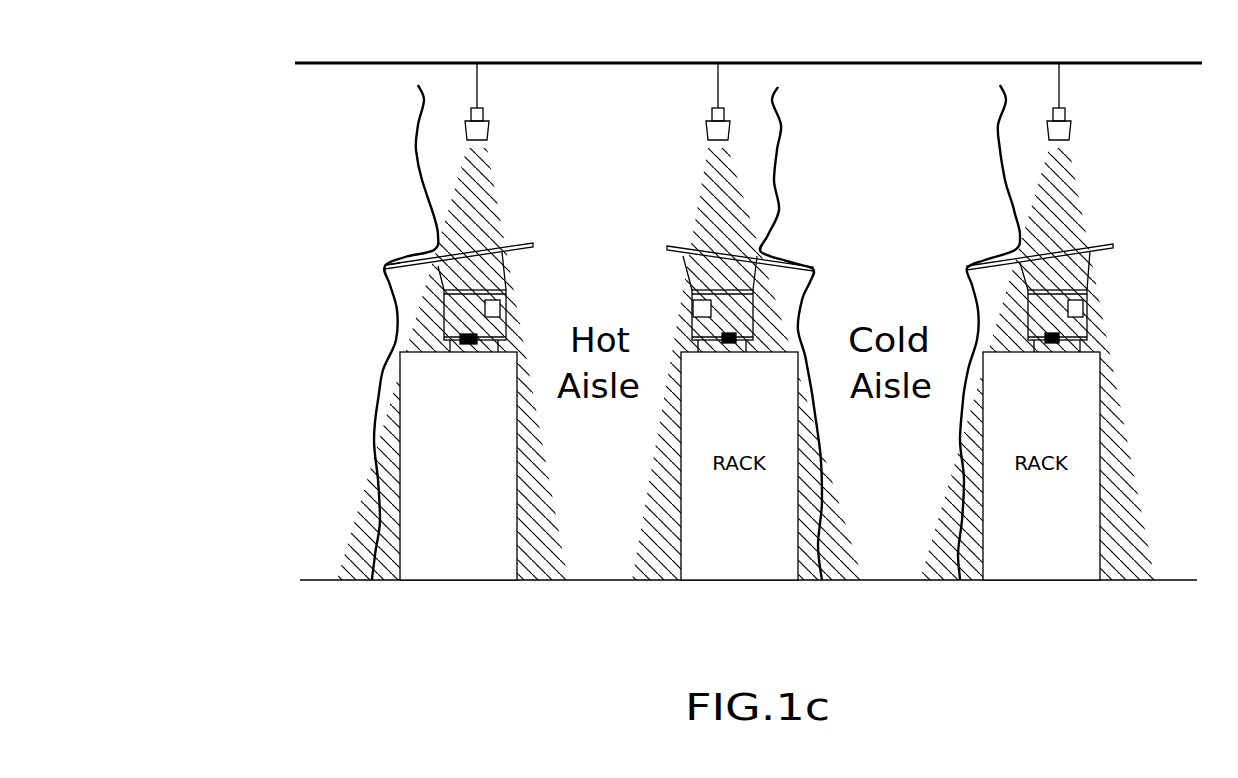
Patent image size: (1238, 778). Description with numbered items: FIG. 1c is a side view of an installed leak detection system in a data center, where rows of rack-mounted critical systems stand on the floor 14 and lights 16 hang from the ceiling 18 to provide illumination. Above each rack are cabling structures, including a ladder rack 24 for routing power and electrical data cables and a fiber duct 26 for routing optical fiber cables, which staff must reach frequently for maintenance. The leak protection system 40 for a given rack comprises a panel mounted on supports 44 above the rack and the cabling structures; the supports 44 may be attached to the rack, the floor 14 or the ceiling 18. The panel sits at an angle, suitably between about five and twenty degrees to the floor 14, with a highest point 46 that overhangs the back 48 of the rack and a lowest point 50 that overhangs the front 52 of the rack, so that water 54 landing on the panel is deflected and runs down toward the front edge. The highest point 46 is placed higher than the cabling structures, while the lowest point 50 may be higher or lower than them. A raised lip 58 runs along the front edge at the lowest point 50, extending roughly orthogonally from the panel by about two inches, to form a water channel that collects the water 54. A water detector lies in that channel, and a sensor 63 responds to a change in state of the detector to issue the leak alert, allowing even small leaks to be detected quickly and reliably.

The floor 14 is at (313, 580).
The lights 16 is at (473, 108).
The ceiling 18 is at (888, 63).
The ladder rack 24 is at (497, 292).
The fiber duct 26 is at (500, 307).
The leak protection system 40 is at (280, 191).
The supports 44 is at (685, 268).
The highest point 46 is at (458, 229).
The back of the rack 48 is at (518, 464).
The lowest point 50 is at (446, 270).
The front of the rack 52 is at (400, 448).
The water 54 is at (412, 133).
The raised lip 58 is at (383, 267).
The sensor 63 is at (448, 340).